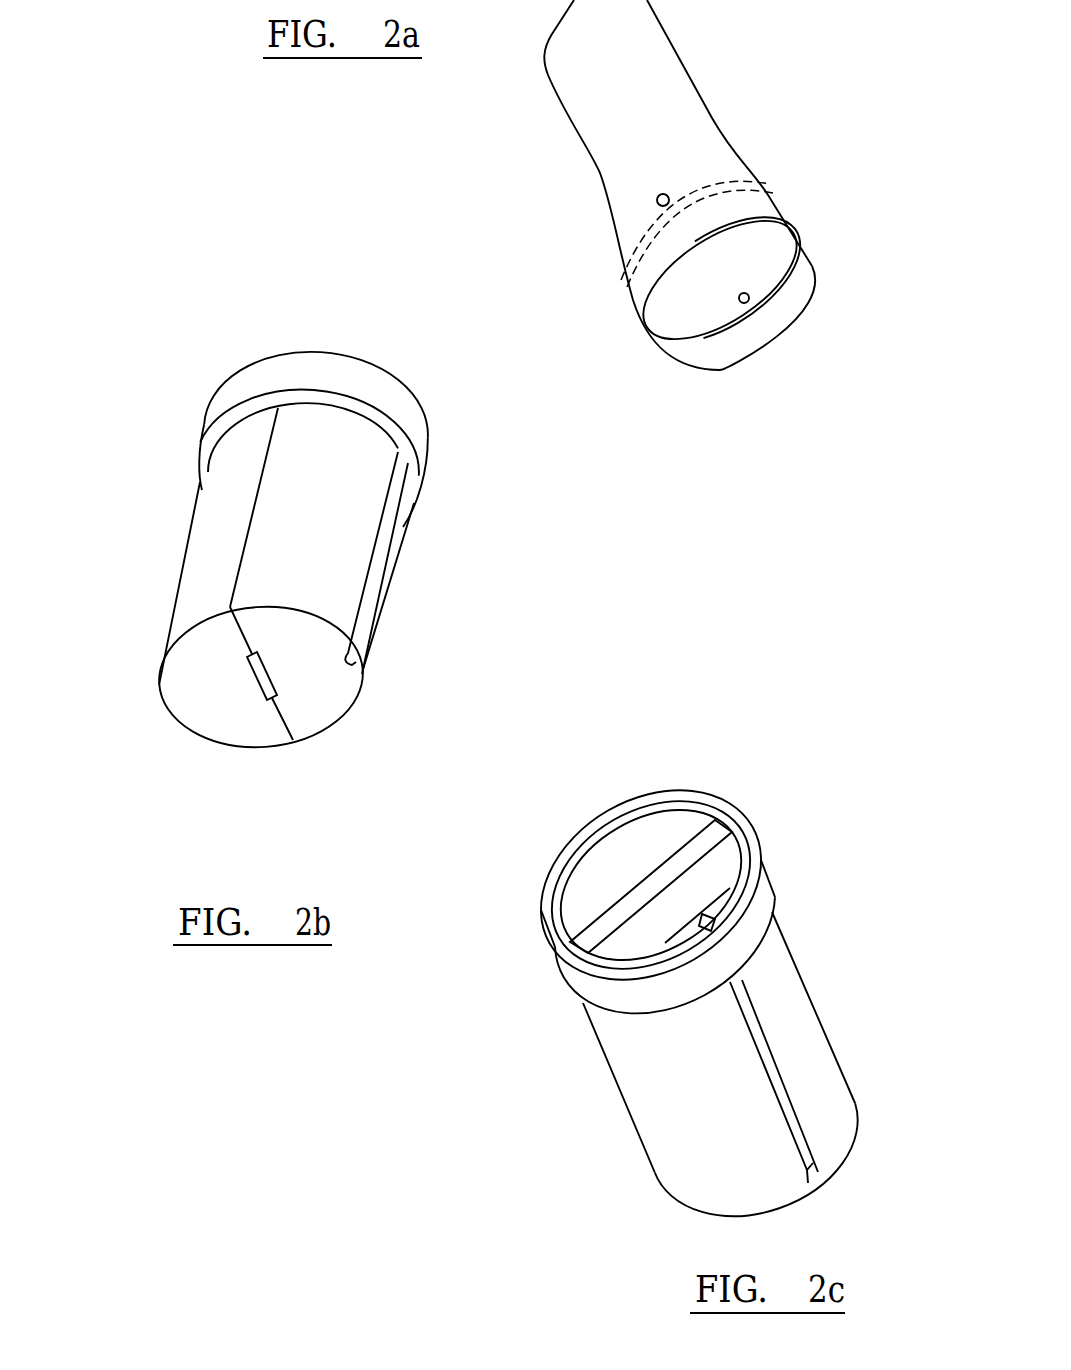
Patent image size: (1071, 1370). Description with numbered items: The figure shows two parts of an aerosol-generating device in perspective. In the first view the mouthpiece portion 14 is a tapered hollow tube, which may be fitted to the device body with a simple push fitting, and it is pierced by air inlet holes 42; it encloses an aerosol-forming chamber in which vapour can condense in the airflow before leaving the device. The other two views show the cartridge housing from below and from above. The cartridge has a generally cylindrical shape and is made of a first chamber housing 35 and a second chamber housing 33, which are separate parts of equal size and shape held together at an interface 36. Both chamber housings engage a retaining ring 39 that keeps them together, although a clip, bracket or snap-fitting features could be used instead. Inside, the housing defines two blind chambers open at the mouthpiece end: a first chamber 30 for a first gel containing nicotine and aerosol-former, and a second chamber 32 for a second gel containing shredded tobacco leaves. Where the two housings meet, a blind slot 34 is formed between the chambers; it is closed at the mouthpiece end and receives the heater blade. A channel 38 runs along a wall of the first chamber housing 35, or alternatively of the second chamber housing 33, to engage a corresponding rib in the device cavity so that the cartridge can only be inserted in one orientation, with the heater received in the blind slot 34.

In FIG. 2A, the mouthpiece portion 14 is at (728, 143).
In FIG. 2A, the air inlet holes 42 is at (657, 197).
In FIG. 2B, the retaining ring 39 is at (397, 402).
In FIG. 2C, the retaining ring 39 is at (765, 895).
In FIG. 2B, the second chamber housing 33 is at (222, 527).
In FIG. 2C, the second chamber housing 33 is at (720, 1064).
In FIG. 2B, the channel 38 is at (380, 549).
In FIG. 2C, the channel 38 is at (792, 1118).
In FIG. 2B, the blind slot 34 is at (262, 679).
In FIG. 2B, the first chamber housing 35 is at (318, 702).
In FIG. 2C, the second chamber 32 is at (613, 848).
In FIG. 2C, the first chamber 30 is at (735, 858).
In FIG. 2C, the interface 36 is at (550, 970).